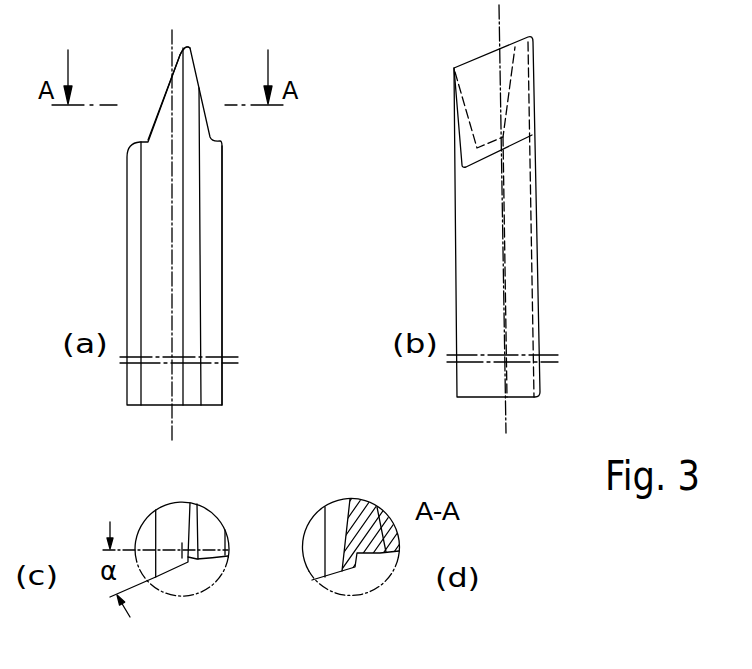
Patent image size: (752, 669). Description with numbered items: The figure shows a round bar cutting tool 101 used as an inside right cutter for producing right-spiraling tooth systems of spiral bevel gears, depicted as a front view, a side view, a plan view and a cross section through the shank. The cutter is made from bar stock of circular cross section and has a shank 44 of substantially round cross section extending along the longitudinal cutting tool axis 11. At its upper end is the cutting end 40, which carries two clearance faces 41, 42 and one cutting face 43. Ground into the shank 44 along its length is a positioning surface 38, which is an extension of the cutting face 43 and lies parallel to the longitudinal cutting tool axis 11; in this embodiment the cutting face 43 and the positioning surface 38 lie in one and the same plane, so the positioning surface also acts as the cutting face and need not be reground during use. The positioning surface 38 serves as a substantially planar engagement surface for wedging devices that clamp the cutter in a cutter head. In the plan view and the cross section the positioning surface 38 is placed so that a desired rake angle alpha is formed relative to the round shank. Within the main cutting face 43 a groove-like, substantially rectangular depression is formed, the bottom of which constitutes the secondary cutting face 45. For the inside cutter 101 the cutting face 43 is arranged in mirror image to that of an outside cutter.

In FIG. 3a, the round bar cutting tool (inside right cutter) 101 is at (168, 227).
In FIG. 3a, the positioning surface 38 is at (208, 283).
In FIG. 3b, the positioning surface 38 is at (537, 250).
In FIG. 3a, the shank 44 is at (223, 325).
In FIG. 3a, the cutting end 40 is at (189, 45).
In FIG. 3a, the secondary cutting face 45 is at (188, 72).
In FIG. 3c, the secondary cutting face 45 is at (195, 562).
In FIG. 3a, the cutting face 43 is at (167, 117).
In FIG. 3c, the cutting face 43 is at (165, 582).
In FIG. 3a, the longitudinal cutting tool axis 11 is at (177, 435).
In FIG. 3b, the longitudinal cutting tool axis 11 is at (500, 15).
In FIG. 3c, the clearance face 42 is at (177, 522).
In FIG. 3c, the clearance face 41 is at (207, 522).